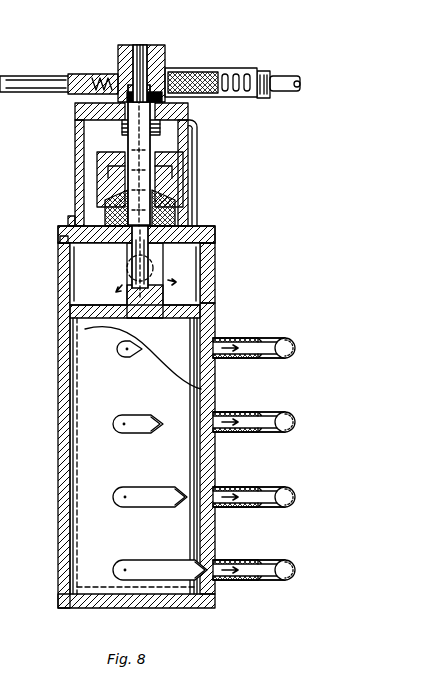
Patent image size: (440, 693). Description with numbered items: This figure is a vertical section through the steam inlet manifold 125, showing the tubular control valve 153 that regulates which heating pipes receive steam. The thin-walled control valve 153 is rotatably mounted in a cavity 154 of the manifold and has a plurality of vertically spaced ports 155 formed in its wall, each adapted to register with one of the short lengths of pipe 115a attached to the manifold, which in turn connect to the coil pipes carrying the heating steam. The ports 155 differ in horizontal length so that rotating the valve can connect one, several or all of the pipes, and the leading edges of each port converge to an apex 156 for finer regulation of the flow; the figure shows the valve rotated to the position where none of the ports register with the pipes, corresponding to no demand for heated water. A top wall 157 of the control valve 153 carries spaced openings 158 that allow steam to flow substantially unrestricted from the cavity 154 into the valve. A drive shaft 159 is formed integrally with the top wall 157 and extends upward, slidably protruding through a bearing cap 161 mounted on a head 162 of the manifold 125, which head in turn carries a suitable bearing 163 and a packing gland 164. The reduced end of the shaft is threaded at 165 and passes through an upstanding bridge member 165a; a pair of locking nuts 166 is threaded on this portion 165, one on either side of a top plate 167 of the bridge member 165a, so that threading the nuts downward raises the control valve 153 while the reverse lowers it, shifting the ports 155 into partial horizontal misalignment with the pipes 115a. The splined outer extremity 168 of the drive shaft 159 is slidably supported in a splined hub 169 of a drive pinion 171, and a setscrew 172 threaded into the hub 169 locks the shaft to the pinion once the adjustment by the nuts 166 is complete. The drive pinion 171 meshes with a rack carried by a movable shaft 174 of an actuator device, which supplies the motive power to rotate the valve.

The steam inlet manifold 125 is at (62, 449).
The tubular control valve 153 is at (218, 316).
The cavity 154 is at (220, 258).
The head 162 is at (210, 228).
The top wall 157 is at (97, 298).
The spaced openings 158 is at (184, 310).
The drive shaft 159 is at (152, 270).
The ports 155 is at (130, 414).
The apex 156 is at (186, 486).
The short length of pipe 115a is at (270, 563).
The bridge member 165a is at (80, 119).
The top plate 167 is at (100, 105).
The locking nuts 166 is at (165, 127).
The bearing cap 161 is at (184, 162).
The packing 163 is at (160, 184).
The packing gland 164 is at (165, 212).
The threaded portion 165 is at (128, 138).
The movable shaft 174 is at (288, 76).
The drive pinion 171 is at (168, 70).
The setscrew 172 is at (118, 62).
The outer extremity 168 is at (150, 47).
The splined hub 169 is at (140, 46).